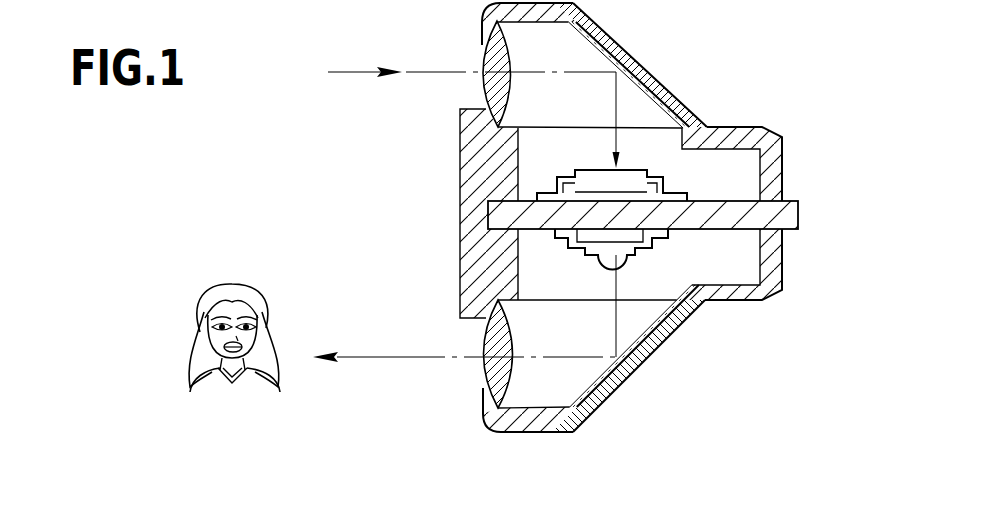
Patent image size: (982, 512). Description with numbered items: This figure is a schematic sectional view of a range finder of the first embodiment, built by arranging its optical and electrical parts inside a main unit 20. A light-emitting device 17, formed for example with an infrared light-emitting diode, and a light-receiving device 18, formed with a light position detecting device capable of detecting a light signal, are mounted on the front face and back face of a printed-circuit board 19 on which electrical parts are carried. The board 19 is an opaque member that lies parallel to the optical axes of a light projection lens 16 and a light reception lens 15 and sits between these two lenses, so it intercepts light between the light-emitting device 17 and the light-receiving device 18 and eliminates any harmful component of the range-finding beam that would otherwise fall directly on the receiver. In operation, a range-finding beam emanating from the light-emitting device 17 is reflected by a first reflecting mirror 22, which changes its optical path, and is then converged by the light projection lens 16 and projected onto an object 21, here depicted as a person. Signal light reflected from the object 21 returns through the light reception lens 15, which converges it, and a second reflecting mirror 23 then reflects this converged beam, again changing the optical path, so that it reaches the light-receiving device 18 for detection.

The light reception lens 15 is at (495, 60).
The light projection lens 16 is at (497, 368).
The light-emitting device 17 is at (627, 255).
The light-receiving device 18 is at (626, 180).
The printed-circuit board 19 is at (799, 214).
The main unit 20 is at (766, 299).
The object 21 is at (265, 299).
The first reflecting mirror 22 is at (666, 343).
The second reflecting mirror 23 is at (656, 90).